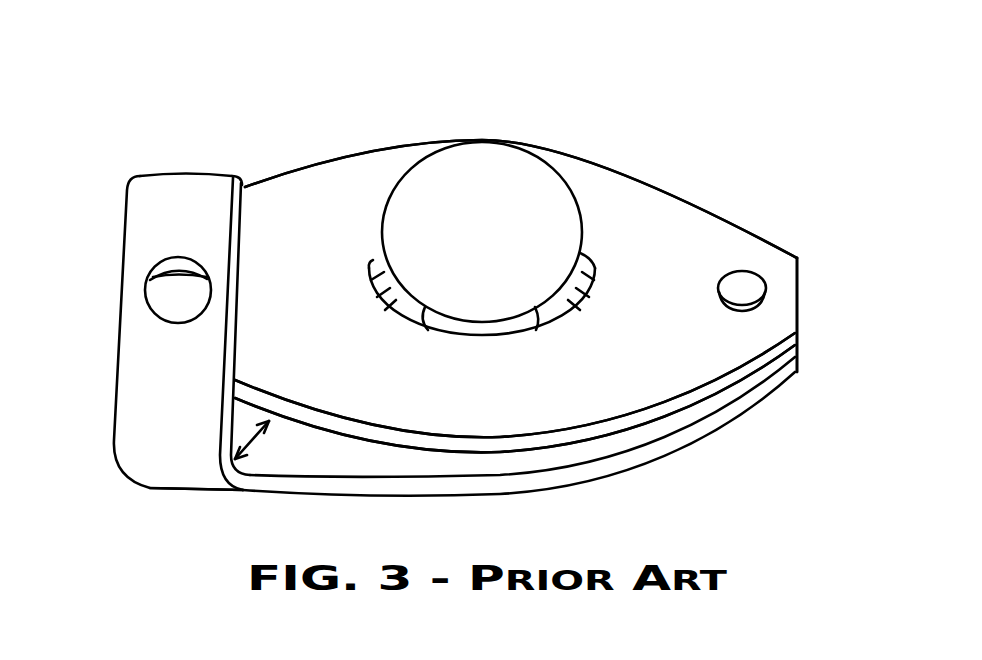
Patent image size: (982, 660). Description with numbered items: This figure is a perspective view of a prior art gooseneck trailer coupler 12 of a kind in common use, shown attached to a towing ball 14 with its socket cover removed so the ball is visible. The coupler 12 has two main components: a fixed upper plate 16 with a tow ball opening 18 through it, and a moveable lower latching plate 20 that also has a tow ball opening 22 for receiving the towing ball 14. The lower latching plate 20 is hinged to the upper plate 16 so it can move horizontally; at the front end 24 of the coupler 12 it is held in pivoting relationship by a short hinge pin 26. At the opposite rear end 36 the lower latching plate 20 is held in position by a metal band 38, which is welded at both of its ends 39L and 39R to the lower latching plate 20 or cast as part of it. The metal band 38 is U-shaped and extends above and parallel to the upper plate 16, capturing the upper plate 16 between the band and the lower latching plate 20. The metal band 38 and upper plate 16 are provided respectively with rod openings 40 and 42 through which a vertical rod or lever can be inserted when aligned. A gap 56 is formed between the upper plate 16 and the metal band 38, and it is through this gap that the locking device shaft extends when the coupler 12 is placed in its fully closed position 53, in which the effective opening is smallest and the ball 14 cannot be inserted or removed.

The gooseneck trailer coupler 12 is at (632, 205).
The towing ball 14 is at (485, 195).
The fixed upper plate 16 is at (407, 417).
The tow ball opening 18 is at (373, 260).
The lower latching plate 20 is at (327, 468).
The tow ball opening 22 is at (367, 292).
The front end 24 is at (797, 303).
The hinge pin 26 is at (742, 272).
The rear end 36 is at (118, 295).
The metal band 38 is at (155, 193).
The left end of metal band 39L is at (200, 172).
The right end of metal band 39R is at (192, 490).
The rod opening 40 is at (163, 268).
The rod opening 42 is at (177, 282).
The fully closed position 53 is at (565, 147).
The gap 56 is at (256, 436).